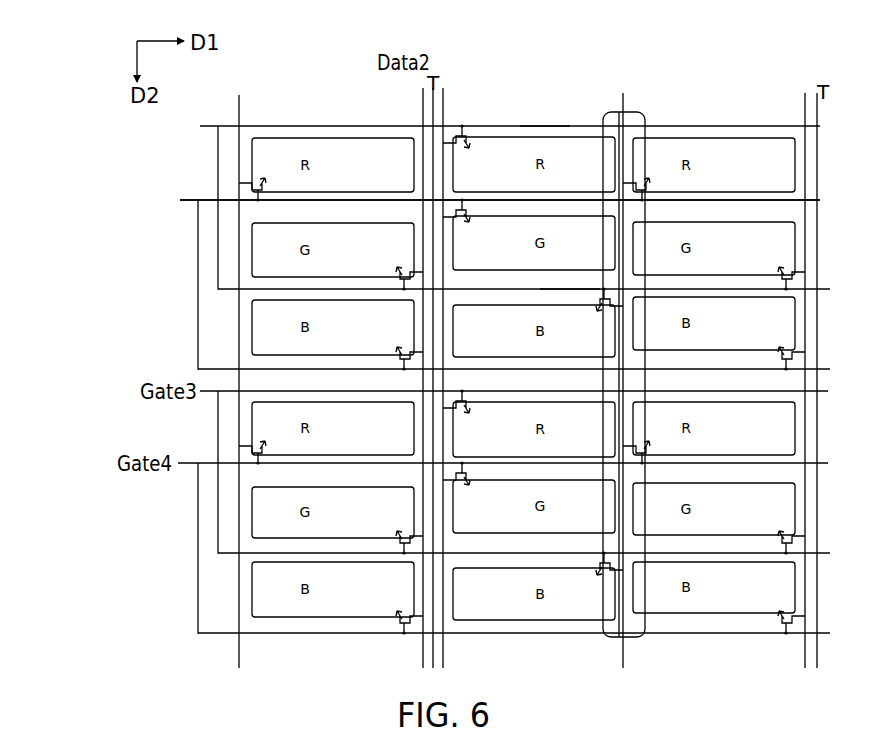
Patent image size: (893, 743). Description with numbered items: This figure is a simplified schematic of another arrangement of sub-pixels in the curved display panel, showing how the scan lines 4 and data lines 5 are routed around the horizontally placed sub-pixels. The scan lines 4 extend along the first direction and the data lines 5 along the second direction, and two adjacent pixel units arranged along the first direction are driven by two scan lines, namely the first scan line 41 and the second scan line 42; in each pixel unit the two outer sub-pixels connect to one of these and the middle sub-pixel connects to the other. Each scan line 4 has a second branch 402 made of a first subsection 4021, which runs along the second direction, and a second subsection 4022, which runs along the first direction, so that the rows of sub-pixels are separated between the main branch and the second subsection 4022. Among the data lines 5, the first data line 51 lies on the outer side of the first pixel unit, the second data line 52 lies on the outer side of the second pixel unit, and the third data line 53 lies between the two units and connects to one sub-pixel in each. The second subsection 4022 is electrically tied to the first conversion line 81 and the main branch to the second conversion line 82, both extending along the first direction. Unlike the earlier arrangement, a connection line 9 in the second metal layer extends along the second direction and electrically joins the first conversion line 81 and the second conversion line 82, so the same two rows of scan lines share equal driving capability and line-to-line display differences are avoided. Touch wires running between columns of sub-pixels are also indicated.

The scan line 4 is at (440, 201).
The data line 5 is at (257, 366).
The connection line 9 is at (618, 216).
The first scan line 41 is at (465, 126).
The second scan line 42 is at (449, 201).
The first data line 51 is at (480, 352).
The second data line 52 is at (641, 363).
The third data line 53 is at (772, 359).
The first conversion line 81 is at (542, 125).
The second conversion line 82 is at (563, 290).
The second branch 402 is at (62, 263).
The first subsection 4021 is at (218, 280).
The second subsection 4022 is at (233, 289).